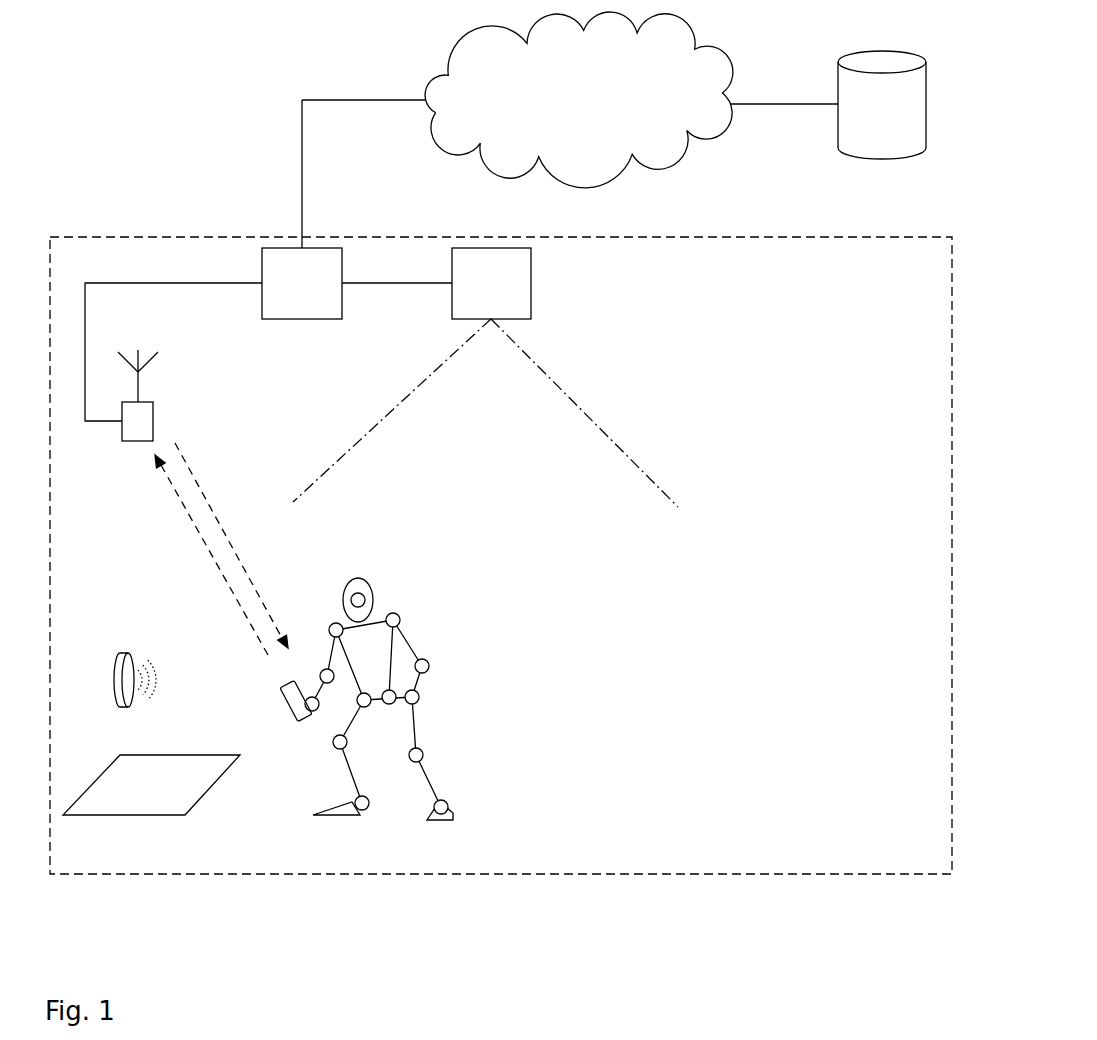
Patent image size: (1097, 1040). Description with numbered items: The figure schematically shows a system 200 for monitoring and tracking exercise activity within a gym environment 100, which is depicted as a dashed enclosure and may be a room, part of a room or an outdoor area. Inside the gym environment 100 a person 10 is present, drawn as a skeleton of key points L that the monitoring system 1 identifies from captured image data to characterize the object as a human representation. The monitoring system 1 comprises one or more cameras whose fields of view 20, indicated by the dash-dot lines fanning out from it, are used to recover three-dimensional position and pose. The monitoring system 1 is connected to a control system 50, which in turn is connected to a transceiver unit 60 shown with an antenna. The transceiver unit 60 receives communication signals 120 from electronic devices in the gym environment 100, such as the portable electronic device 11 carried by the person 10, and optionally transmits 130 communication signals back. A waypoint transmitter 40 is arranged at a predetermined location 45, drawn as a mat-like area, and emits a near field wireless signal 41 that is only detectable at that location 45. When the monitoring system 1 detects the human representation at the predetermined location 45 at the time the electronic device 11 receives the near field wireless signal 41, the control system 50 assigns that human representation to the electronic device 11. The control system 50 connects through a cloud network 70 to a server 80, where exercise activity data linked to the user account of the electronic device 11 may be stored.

The monitoring system 1 is at (484, 303).
The person 10 is at (390, 590).
The portable electronic device 11 is at (288, 722).
The fields of view 20 is at (473, 405).
The waypoint transmitter 40 is at (135, 655).
The near field wireless signal 41 is at (163, 672).
The predetermined location 45 is at (137, 760).
The control system 50 is at (288, 303).
The transceiver unit 60 is at (128, 447).
The network 70 is at (566, 102).
The server 80 is at (866, 124).
The gym environment 100 is at (849, 317).
The communication signals 120 is at (178, 530).
The transmitting communication signals 130 is at (190, 466).
The system 200 is at (125, 172).
The key points L is at (433, 665).